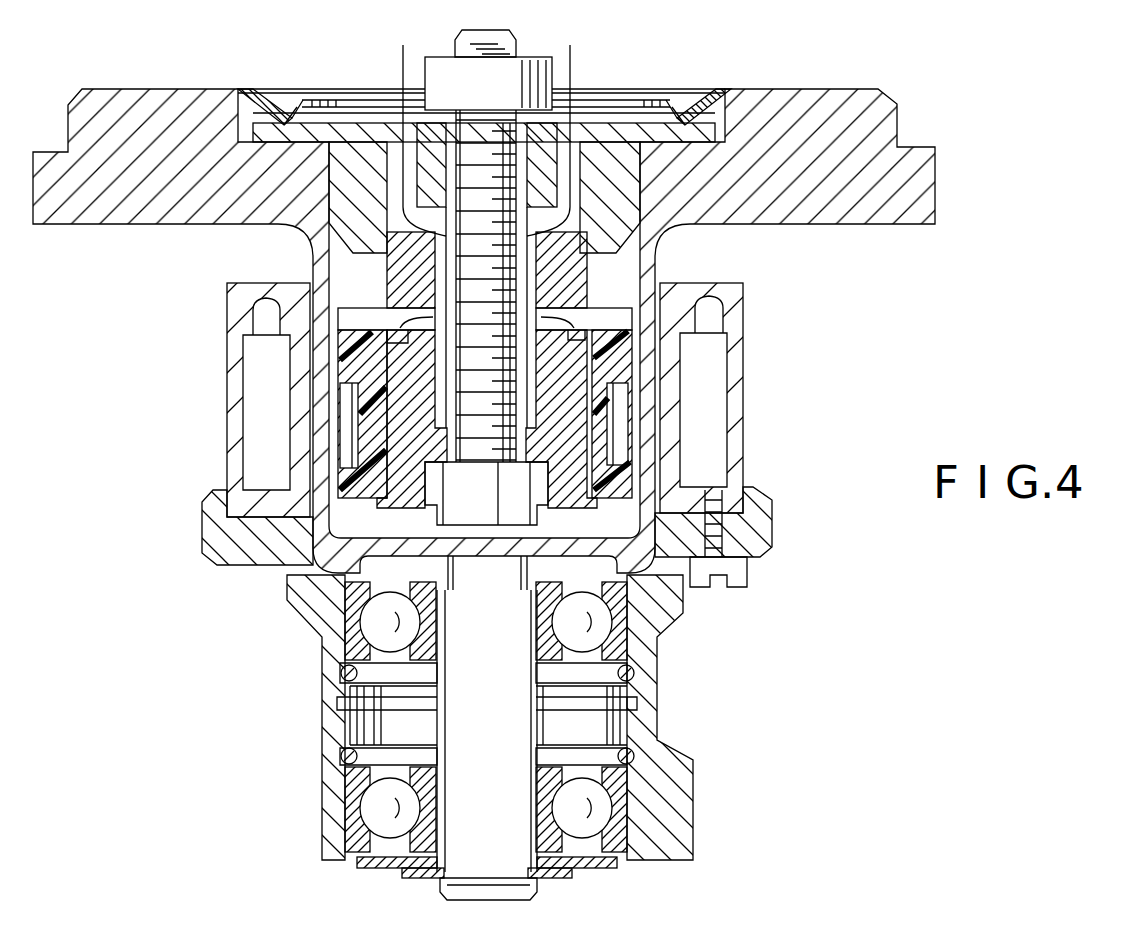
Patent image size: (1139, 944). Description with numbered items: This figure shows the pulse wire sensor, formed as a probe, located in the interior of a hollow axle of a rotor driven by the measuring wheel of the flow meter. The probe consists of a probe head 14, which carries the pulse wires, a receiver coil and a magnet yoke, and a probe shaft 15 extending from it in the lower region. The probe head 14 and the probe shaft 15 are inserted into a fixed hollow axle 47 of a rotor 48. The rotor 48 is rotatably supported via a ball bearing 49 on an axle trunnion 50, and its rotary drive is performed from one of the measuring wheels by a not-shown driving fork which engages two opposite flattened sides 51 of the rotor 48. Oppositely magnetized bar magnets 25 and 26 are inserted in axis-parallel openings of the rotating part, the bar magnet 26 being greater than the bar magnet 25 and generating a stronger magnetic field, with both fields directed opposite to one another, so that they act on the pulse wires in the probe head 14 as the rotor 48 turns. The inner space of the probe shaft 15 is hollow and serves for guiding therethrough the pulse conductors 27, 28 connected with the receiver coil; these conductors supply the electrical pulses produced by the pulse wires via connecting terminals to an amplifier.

The probe head 14 is at (300, 570).
The probe shaft 15 is at (395, 270).
The bar magnet 25 is at (713, 388).
The bar magnet 26 is at (258, 390).
The pulse conductor 27 is at (403, 67).
The flexible seal 28 is at (572, 65).
The fixed hollow axle 47 is at (329, 274).
The rotor 48 is at (308, 603).
The ball bearing 49 is at (600, 622).
The axle trunnion 50 is at (443, 867).
The flattened sides 51 is at (326, 790).